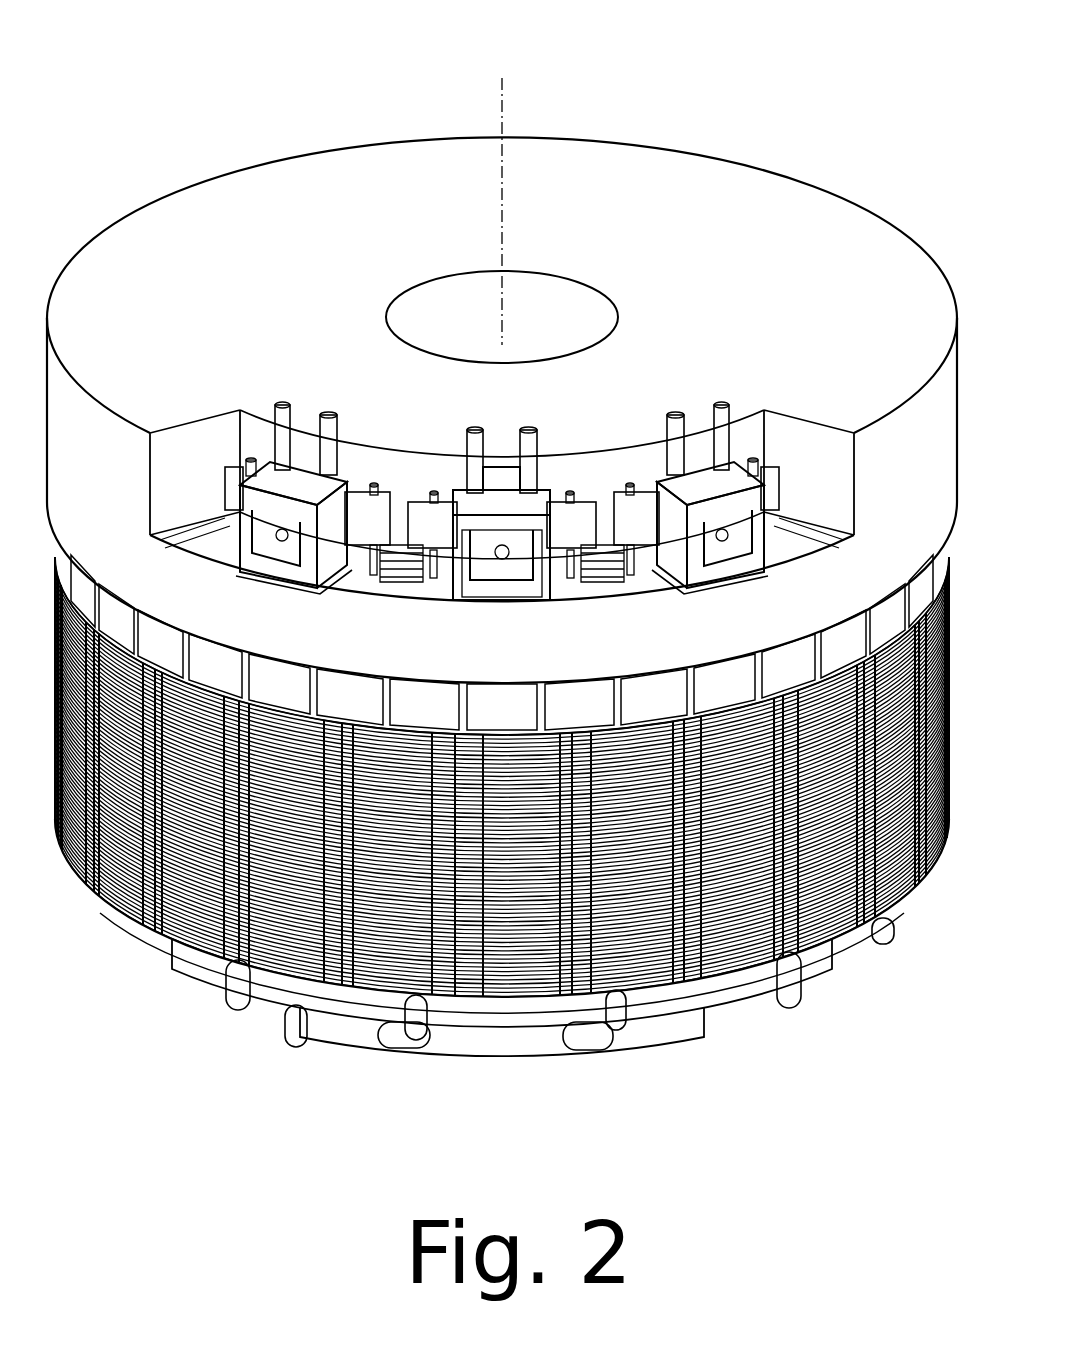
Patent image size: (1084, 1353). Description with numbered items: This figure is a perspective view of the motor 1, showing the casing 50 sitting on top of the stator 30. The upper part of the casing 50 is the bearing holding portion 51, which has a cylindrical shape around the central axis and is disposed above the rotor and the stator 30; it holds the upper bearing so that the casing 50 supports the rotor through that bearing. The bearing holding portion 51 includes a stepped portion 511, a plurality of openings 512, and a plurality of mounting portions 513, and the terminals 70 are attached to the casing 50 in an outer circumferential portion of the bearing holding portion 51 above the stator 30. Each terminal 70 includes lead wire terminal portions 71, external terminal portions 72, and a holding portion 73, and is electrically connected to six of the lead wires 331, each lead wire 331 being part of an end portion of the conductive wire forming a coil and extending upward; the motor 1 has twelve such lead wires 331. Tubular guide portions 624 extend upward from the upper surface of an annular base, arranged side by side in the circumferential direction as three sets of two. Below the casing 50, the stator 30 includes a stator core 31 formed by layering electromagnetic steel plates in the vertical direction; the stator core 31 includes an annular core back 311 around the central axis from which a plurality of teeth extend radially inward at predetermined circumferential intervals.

The motor 1 is at (161, 63).
The casing 50 is at (281, 147).
The bearing holding portion 51 is at (601, 137).
The stepped portion 511 is at (182, 412).
The opening 512 is at (235, 560).
The mounting portion 513 is at (290, 567).
The terminal 70 is at (556, 466).
The lead wire terminal portion 71 is at (586, 500).
The external terminal portion 72 is at (330, 413).
The holding portion 73 is at (283, 403).
The lead wire 331 is at (251, 460).
The guide portion 624 is at (372, 578).
The stator 30 is at (147, 961).
The stator core 31 is at (346, 994).
The core back 311 is at (505, 1005).